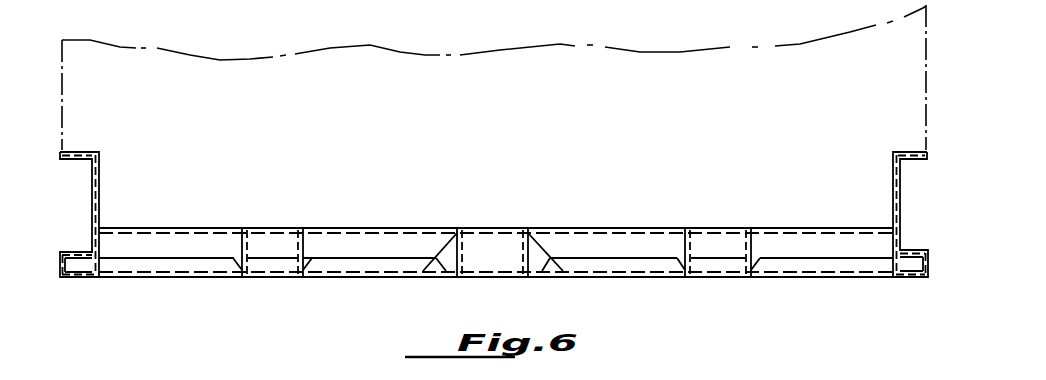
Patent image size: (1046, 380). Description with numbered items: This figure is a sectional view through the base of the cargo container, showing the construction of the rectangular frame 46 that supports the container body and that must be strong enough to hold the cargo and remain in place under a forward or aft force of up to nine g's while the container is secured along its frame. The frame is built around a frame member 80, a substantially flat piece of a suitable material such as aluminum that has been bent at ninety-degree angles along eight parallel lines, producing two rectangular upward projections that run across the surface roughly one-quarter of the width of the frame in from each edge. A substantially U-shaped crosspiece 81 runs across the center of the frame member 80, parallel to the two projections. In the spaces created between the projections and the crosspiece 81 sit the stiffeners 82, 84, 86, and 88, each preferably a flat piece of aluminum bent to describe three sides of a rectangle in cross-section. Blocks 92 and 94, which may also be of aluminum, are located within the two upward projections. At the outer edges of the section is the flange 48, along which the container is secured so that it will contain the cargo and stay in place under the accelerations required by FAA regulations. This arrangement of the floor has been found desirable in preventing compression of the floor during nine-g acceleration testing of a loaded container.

The rectangular frame 46 is at (88, 286).
The flange 48 is at (934, 270).
The frame member 80 is at (153, 279).
The U-shaped crosspiece 81 is at (468, 274).
The stiffener 82 is at (212, 248).
The stiffener 84 is at (388, 238).
The stiffener 86 is at (610, 240).
The stiffener 88 is at (812, 240).
The block 92 is at (273, 254).
The block 94 is at (717, 254).